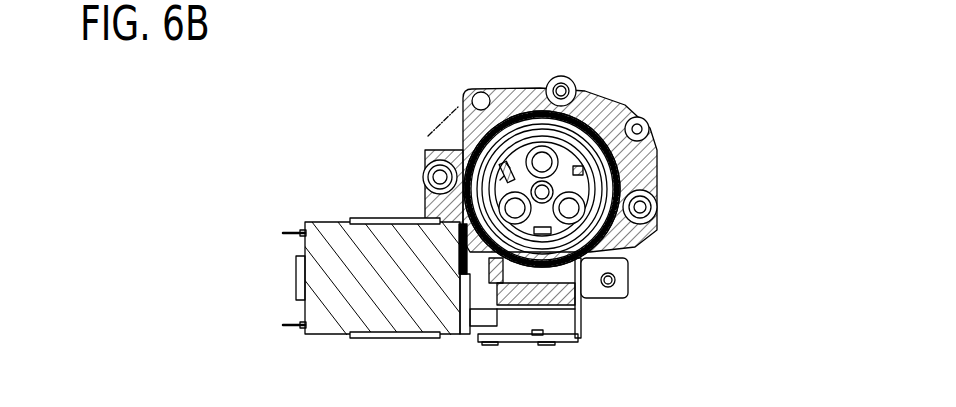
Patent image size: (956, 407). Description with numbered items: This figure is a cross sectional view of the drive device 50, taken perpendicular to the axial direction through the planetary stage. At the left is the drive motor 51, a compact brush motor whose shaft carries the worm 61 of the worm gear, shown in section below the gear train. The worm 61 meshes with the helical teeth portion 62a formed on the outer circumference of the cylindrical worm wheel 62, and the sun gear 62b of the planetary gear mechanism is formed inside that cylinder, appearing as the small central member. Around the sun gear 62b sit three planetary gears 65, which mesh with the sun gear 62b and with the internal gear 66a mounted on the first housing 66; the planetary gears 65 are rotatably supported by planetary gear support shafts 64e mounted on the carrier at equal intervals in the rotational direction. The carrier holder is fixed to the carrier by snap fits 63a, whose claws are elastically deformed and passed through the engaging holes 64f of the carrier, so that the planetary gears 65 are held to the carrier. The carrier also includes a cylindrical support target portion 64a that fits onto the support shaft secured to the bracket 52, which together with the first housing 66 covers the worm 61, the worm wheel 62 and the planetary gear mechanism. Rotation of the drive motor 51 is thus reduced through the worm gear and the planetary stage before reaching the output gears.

The drive device 50 is at (726, 86).
The drive motor 51 is at (357, 222).
The bracket 52 is at (630, 297).
The worm 61 is at (565, 277).
The worm wheel 62 is at (663, 201).
The helical teeth portion 62a is at (582, 202).
The sun gear 62b is at (557, 187).
The snap fits 63a is at (510, 175).
The support target portion 64a is at (543, 158).
The planetary gear support shafts 64e is at (502, 192).
The engaging holes 64f is at (508, 162).
The planetary gears 65 is at (500, 180).
The first housing 66 is at (510, 313).
The internal gear 66a is at (508, 165).